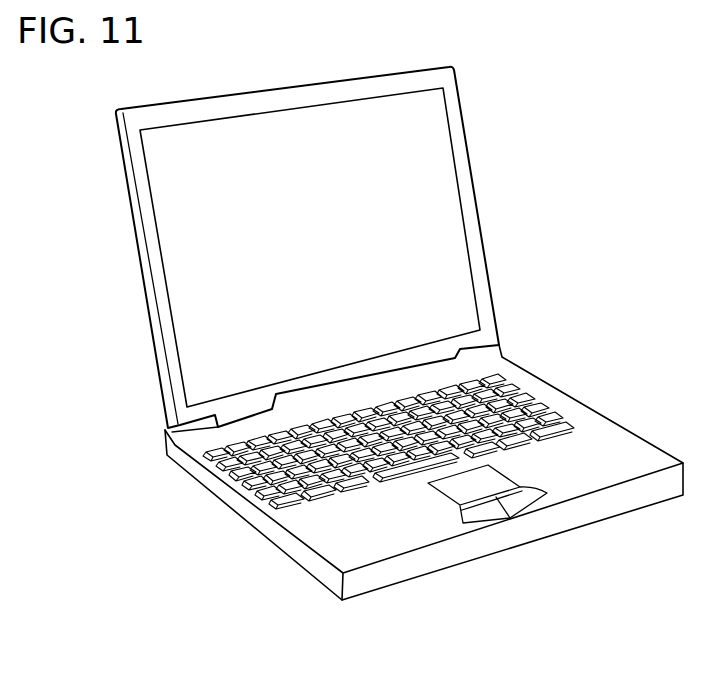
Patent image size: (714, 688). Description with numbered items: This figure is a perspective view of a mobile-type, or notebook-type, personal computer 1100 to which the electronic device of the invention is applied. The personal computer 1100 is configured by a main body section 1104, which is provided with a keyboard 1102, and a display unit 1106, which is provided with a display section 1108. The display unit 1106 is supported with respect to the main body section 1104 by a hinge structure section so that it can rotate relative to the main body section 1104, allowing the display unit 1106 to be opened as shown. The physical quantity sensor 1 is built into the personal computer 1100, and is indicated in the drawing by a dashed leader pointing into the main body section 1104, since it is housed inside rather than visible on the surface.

The personal computer 1100 is at (492, 84).
The keyboard 1102 is at (534, 392).
The main body section 1104 is at (418, 537).
The display unit 1106 is at (473, 165).
The display section 1108 is at (305, 140).
The physical quantity sensor 1 is at (619, 455).